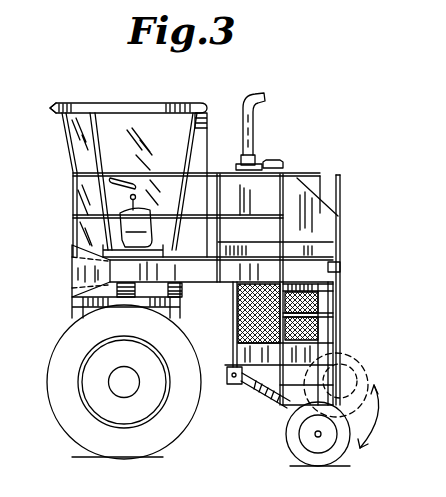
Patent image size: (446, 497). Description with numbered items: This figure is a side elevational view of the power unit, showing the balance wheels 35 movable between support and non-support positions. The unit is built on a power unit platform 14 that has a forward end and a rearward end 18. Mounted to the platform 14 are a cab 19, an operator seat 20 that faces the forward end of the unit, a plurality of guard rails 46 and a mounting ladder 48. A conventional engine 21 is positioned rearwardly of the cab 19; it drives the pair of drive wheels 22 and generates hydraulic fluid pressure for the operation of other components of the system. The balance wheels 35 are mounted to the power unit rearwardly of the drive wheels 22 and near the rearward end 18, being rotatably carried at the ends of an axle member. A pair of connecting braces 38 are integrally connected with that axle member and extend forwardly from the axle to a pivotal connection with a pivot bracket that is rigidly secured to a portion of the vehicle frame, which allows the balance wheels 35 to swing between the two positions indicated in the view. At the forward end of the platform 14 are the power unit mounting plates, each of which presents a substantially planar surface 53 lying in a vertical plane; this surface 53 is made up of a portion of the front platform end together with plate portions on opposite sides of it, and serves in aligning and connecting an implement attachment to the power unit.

The power unit platform 14 is at (213, 270).
The rearward end 18 is at (340, 268).
The cab 19 is at (83, 110).
The operator seat 20 is at (167, 176).
The engine 21 is at (296, 176).
The drive wheels 22 is at (142, 442).
The balance wheels 35 is at (362, 368).
The connecting braces 38 is at (247, 380).
The guard rails 46 is at (138, 180).
The mounting ladder 48 is at (255, 393).
The planar surface 53 is at (72, 262).